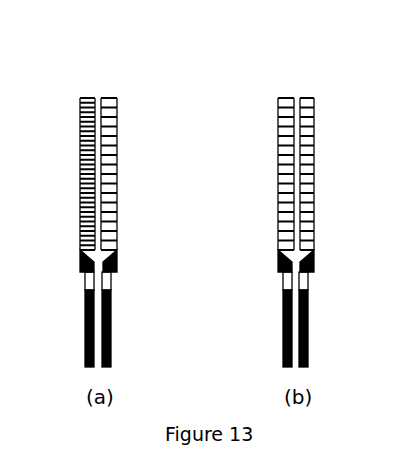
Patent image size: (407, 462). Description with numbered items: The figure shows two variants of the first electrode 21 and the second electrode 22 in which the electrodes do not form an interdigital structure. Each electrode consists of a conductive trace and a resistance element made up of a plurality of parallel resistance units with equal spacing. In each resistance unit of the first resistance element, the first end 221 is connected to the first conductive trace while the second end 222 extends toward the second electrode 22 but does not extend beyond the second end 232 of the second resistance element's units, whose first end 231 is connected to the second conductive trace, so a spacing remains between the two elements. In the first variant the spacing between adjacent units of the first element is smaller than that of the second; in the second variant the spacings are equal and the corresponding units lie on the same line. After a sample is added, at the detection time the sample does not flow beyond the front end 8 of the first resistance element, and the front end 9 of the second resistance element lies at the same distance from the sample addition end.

The first end of resistance unit of first resistance element 221 is at (80, 98).
The second end of resistance unit of first resistance element 222 is at (97, 98).
The second end of resistance unit of second resistance element 232 is at (100, 98).
The first end of resistance unit of second resistance element 231 is at (116, 98).
The first electrode 21 is at (82, 270).
The second electrode 22 is at (112, 270).
The front end of the first resistance element 8 is at (83, 268).
The front end of the second resistance element 9 is at (110, 270).